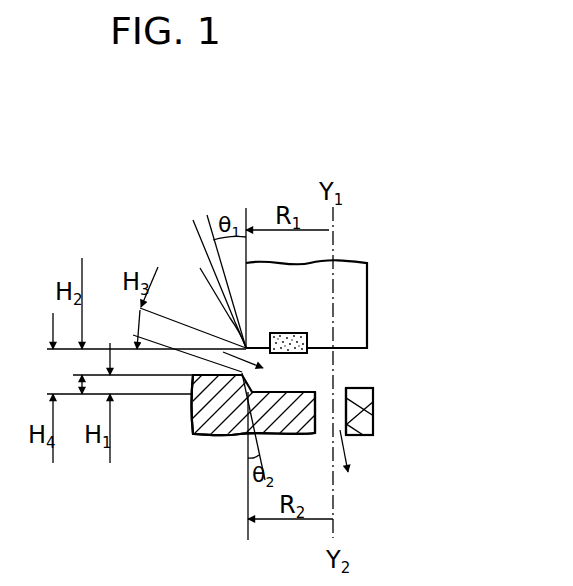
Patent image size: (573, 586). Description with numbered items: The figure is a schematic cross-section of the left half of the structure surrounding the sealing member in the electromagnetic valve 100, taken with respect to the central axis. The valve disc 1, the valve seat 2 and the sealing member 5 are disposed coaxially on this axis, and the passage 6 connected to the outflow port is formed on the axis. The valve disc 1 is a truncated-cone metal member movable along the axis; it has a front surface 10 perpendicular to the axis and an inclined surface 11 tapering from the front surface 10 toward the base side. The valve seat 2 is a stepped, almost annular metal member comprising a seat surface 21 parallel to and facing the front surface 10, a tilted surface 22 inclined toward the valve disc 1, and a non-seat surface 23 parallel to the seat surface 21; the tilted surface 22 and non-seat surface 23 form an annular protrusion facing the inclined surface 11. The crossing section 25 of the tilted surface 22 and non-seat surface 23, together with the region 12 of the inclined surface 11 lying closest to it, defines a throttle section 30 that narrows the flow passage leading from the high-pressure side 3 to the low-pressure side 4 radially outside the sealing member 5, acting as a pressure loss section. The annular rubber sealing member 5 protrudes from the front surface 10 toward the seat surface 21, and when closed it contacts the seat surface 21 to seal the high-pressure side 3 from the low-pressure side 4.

The electromagnetic valve 100 is at (418, 187).
The throttle section 30 is at (143, 197).
The high-pressure side 3 is at (200, 319).
The inclined surface 11 is at (206, 270).
The region of the inclined surface 12 is at (206, 295).
The valve disc 1 is at (357, 289).
The front surface 10 is at (357, 350).
The sealing member 5 is at (305, 334).
The seat surface 21 is at (300, 391).
The non-seat surface 23 is at (198, 370).
The crossing section 25 is at (193, 435).
The tilted surface 22 is at (231, 434).
The passage 6 is at (315, 435).
The valve seat 2 is at (378, 407).
The low-pressure side 4 is at (340, 412).